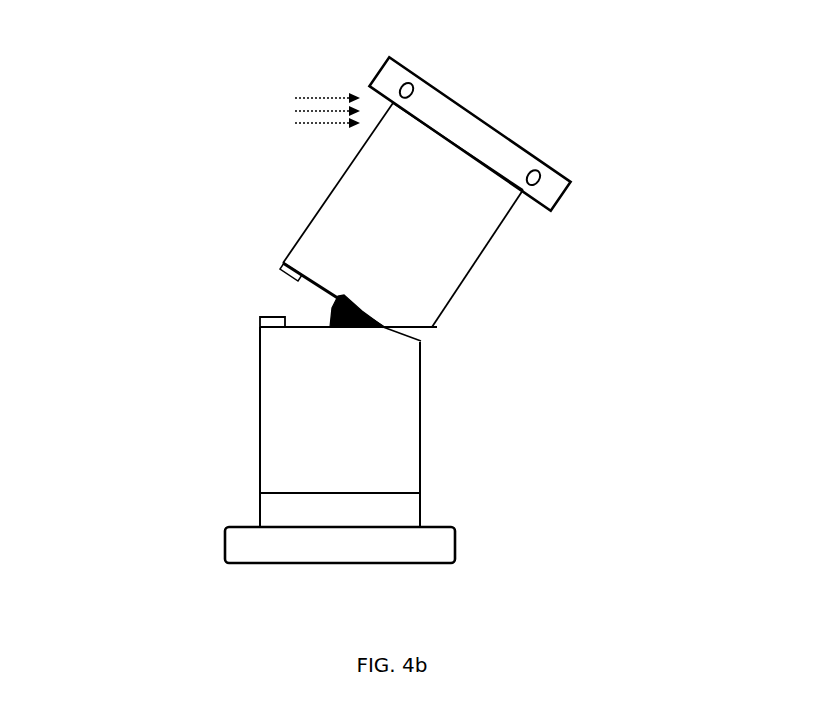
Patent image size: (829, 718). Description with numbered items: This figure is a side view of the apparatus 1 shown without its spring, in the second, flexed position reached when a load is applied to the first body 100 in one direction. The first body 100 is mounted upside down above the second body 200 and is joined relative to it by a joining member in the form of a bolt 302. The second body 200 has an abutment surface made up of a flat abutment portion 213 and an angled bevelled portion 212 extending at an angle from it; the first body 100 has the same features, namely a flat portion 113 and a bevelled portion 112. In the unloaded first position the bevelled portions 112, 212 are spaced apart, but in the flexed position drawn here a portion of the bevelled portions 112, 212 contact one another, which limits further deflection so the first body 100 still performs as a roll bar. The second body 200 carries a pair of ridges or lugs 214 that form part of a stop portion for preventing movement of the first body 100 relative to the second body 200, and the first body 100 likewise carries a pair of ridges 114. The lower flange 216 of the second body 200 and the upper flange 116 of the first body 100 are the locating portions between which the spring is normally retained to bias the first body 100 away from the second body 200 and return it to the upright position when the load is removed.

The apparatus 1 is at (113, 82).
The first body 100 is at (377, 217).
The bevelled portion 112 is at (446, 326).
The flat portion 113 is at (305, 265).
The pair of ridges 114 is at (285, 264).
The upper flange 116 is at (498, 143).
The second body 200 is at (353, 422).
The bevelled portion 212 is at (430, 346).
The flat abutment portion 213 is at (300, 328).
The pair of ridges or lugs 214 is at (259, 328).
The lower flange 216 is at (445, 545).
The bolt 302 is at (360, 310).